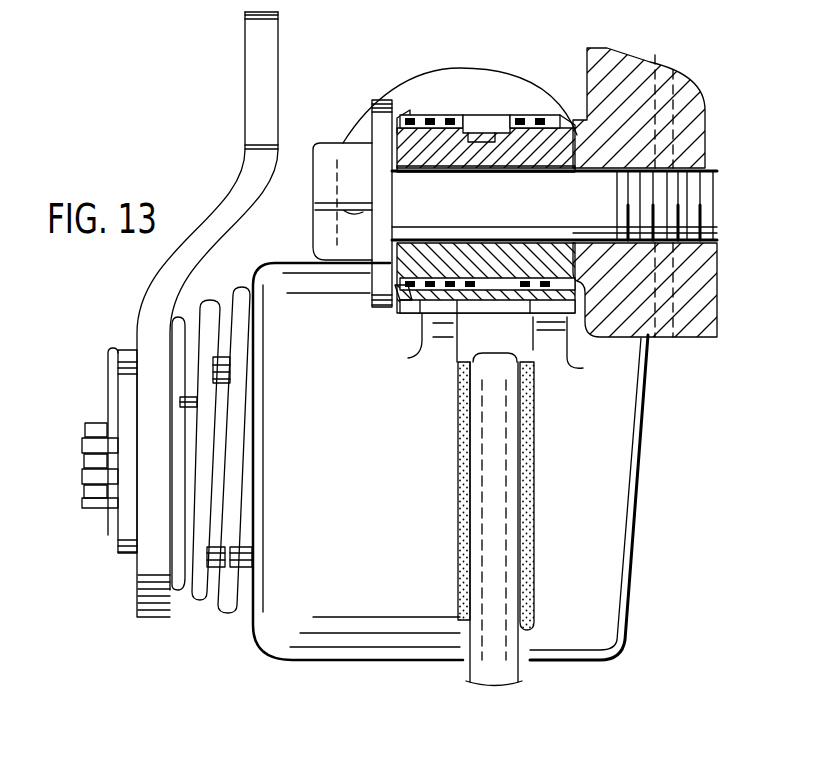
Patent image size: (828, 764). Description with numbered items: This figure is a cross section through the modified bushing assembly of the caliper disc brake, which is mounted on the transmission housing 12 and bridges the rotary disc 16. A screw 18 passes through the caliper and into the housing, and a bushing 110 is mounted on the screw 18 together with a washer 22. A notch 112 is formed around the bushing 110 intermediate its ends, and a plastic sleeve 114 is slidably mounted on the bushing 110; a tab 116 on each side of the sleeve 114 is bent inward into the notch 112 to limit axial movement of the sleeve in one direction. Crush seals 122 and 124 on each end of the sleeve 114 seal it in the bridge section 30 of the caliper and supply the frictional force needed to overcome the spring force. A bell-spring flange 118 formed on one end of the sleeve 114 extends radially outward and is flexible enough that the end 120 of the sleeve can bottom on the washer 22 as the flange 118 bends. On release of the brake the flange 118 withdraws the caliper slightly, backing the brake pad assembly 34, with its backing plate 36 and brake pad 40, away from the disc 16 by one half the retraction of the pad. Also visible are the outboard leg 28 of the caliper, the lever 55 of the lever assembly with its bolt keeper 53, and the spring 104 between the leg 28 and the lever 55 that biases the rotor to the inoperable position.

The lever 55 is at (245, 48).
The screw 18 is at (325, 143).
The washer 22 is at (378, 100).
The flange 118 is at (410, 107).
The crush seal 122 is at (433, 120).
The bridge section 30 is at (493, 70).
The crush seal 124 is at (544, 118).
The bushing 110 is at (573, 113).
The end of the sleeve 120 is at (400, 173).
The notch 112 is at (460, 258).
The tab 116 is at (520, 172).
The plastic sleeve 114 is at (405, 312).
The transmission housing 12 is at (685, 340).
The brake pad 40 is at (457, 410).
The brake pad assembly 34 is at (523, 478).
The backing plate 36 is at (633, 550).
The bolt keeper 53 is at (118, 532).
The spring 104 is at (198, 600).
The leg 28 is at (338, 655).
The rotary disc 16 is at (470, 670).